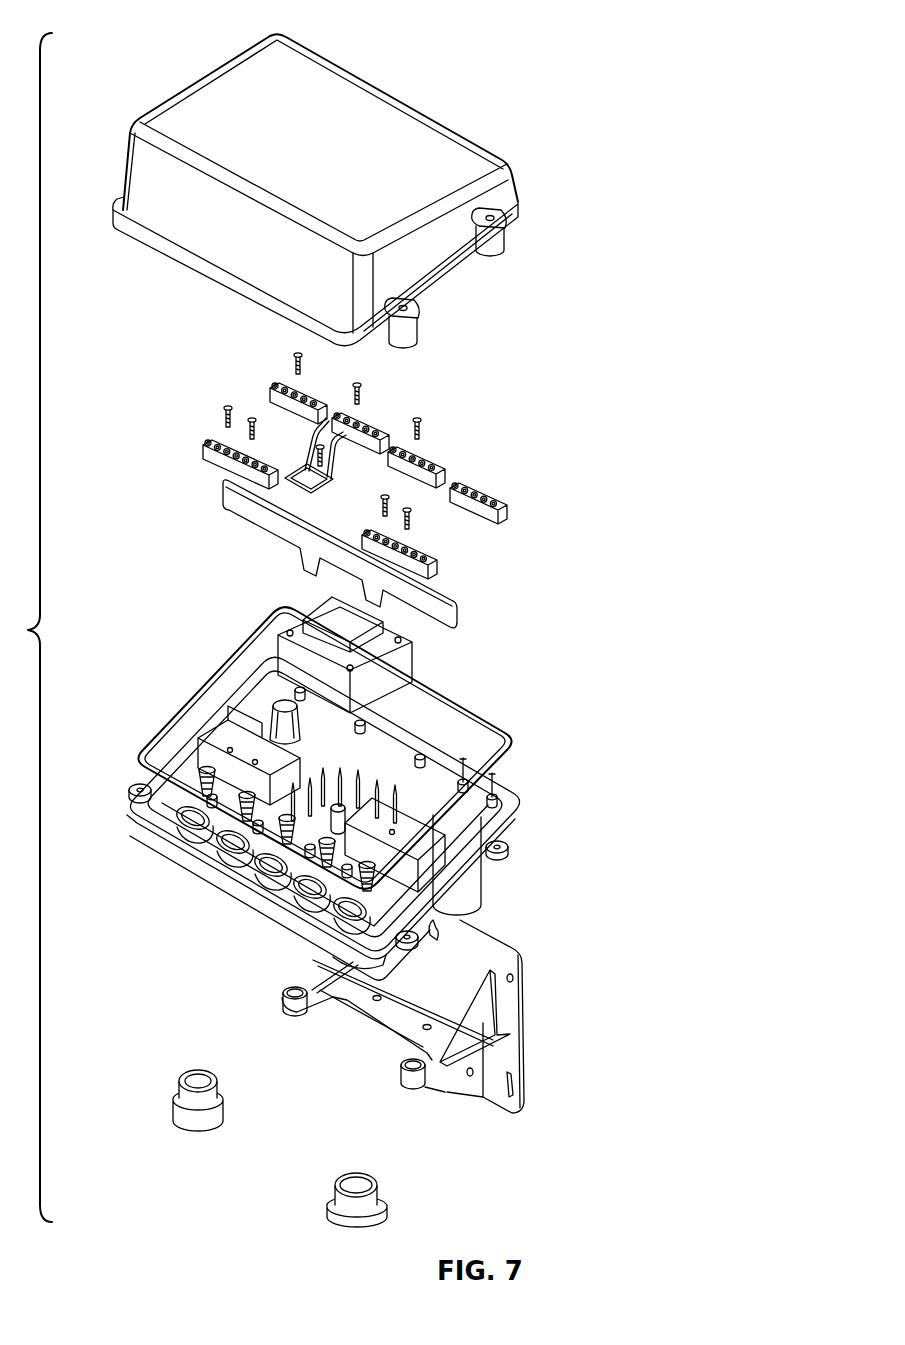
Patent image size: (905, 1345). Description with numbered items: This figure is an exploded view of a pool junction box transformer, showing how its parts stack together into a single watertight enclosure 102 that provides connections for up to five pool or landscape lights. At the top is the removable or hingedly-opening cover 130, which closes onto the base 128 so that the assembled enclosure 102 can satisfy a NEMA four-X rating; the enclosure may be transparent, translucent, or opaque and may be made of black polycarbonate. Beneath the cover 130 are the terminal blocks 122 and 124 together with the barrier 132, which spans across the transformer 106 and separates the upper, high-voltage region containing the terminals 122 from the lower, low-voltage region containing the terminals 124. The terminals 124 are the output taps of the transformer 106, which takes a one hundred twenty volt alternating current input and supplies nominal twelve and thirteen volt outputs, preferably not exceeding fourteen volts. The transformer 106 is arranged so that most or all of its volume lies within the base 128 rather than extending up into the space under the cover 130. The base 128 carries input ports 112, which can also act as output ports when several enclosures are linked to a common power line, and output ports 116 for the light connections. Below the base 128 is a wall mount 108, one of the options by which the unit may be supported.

The enclosure 102 is at (422, 732).
The transformer 106 is at (273, 620).
The wall mount 108 is at (511, 1003).
The input ports 112 is at (267, 708).
The output ports 116 is at (347, 913).
The terminal blocks 122 is at (305, 396).
The terminal blocks 124 is at (222, 463).
The base 128 is at (365, 925).
The cover 130 is at (368, 104).
The barrier 132 is at (430, 610).